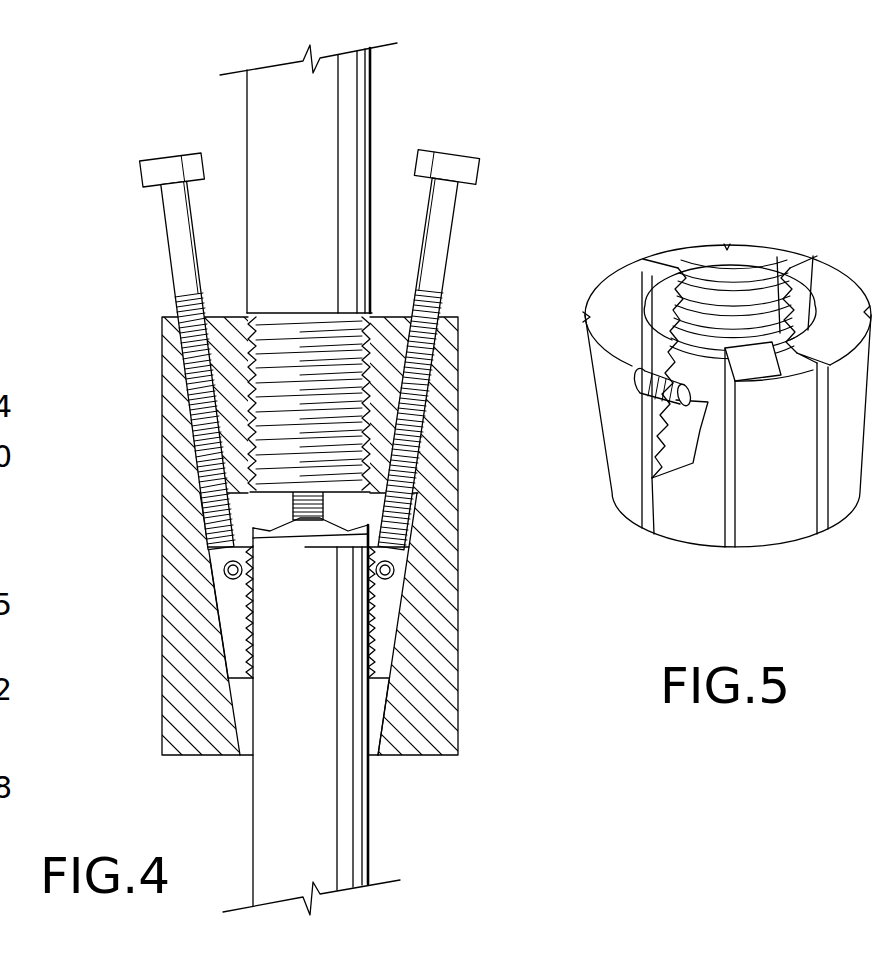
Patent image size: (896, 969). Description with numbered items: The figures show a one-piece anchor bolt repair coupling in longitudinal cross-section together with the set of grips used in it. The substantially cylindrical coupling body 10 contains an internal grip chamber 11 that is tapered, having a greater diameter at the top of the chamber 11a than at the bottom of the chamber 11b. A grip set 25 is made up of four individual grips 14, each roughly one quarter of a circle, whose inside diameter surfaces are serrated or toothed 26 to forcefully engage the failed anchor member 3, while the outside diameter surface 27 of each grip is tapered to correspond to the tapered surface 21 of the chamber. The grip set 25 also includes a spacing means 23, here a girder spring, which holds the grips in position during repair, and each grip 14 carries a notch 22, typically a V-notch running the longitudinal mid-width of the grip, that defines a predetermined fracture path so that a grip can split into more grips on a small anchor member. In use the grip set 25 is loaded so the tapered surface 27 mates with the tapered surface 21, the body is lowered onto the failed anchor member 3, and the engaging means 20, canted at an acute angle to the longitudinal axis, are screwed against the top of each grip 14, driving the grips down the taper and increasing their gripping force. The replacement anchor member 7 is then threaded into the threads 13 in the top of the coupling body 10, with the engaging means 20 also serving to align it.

In FIG. 4, the failed anchor member 3 is at (345, 845).
In FIG. 4, the replacement anchor member 7 is at (273, 112).
In FIG. 4, the anchor bolt repair coupling body 10 is at (165, 340).
In FIG. 4, the internal grip chamber 11 is at (248, 508).
In FIG. 4, the top of the chamber 11a is at (417, 518).
In FIG. 4, the bottom of the chamber 11b is at (378, 740).
In FIG. 4, the threads 13 is at (363, 400).
In FIG. 4, the grip 14 is at (224, 597).
In FIG. 5, the grip 14 is at (752, 252).
In FIG. 4, the engaging means 20 is at (447, 166).
In FIG. 4, the tapered surface 21 is at (223, 655).
In FIG. 5, the notch 22 is at (727, 245).
In FIG. 5, the spacing means 23 is at (647, 393).
In FIG. 5, the grip set 25 is at (645, 260).
In FIG. 5, the serrated inside diameter surface 26 is at (717, 300).
In FIG. 5, the outside diameter surface 27 is at (770, 508).